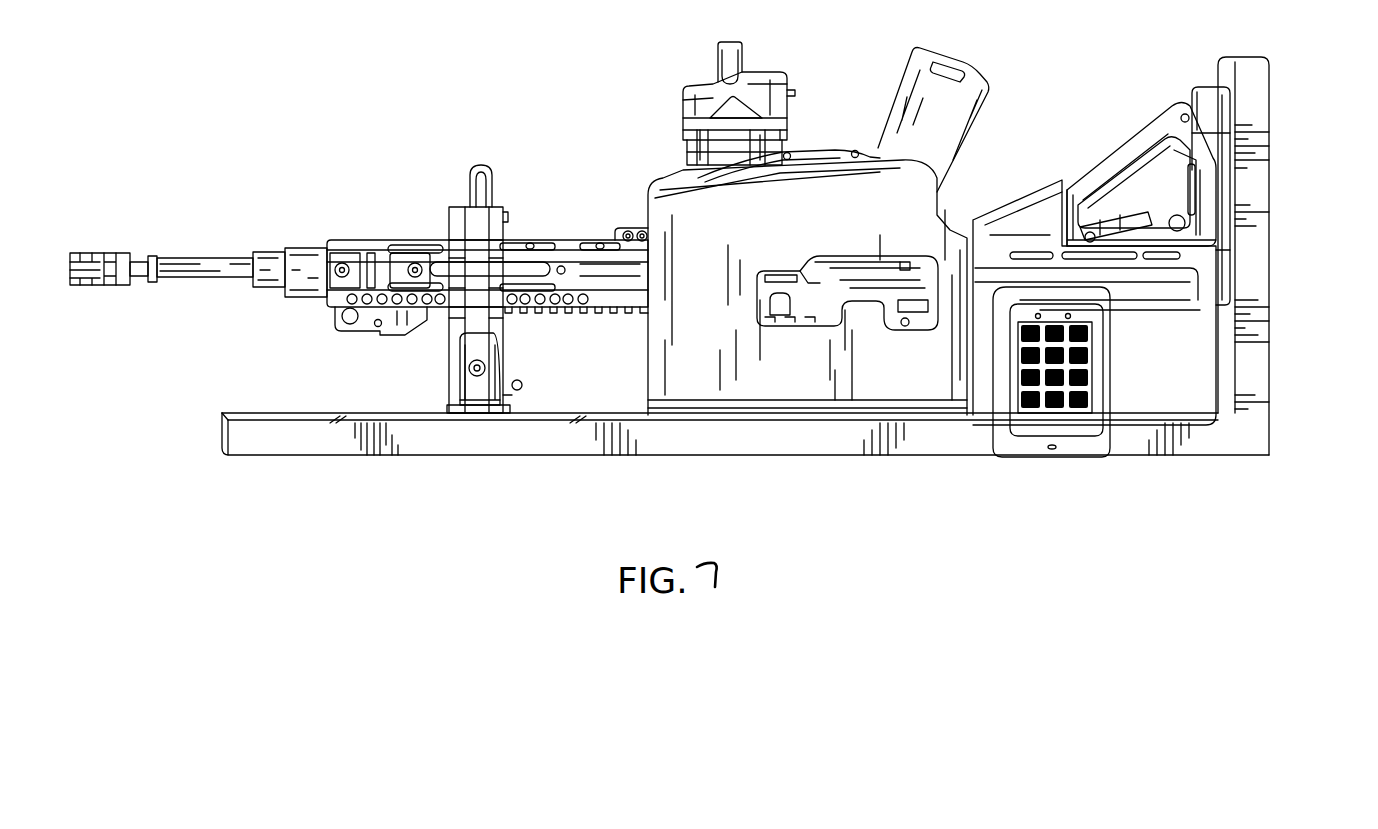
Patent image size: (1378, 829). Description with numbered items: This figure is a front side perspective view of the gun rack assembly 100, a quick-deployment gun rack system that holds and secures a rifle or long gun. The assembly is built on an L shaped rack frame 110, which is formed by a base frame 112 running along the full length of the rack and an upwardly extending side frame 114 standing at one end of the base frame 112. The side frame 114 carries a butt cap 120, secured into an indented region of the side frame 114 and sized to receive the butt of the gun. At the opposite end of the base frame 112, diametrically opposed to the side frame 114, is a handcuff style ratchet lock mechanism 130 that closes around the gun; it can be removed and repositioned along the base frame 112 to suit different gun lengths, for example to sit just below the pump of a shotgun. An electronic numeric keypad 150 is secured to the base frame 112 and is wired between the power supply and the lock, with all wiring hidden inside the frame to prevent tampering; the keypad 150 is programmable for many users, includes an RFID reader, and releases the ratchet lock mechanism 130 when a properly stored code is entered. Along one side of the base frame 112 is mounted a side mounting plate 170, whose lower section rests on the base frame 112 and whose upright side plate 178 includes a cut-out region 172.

The gun rack assembly 100 is at (572, 489).
The rack frame 110 is at (657, 446).
The base frame 112 is at (806, 447).
The side frame 114 is at (1247, 162).
The butt cap 120 is at (1205, 105).
The ratchet lock mechanism 130 is at (448, 395).
The electronic numeric keypad 150 is at (1040, 420).
The side mounting plate 170 is at (893, 158).
The cut-out region 172 is at (905, 265).
The side plate 178 is at (808, 178).